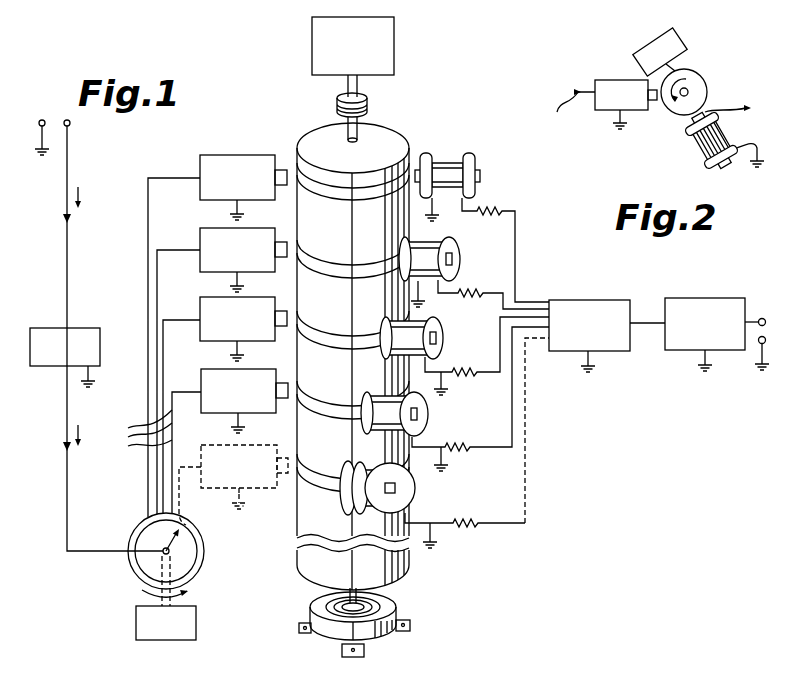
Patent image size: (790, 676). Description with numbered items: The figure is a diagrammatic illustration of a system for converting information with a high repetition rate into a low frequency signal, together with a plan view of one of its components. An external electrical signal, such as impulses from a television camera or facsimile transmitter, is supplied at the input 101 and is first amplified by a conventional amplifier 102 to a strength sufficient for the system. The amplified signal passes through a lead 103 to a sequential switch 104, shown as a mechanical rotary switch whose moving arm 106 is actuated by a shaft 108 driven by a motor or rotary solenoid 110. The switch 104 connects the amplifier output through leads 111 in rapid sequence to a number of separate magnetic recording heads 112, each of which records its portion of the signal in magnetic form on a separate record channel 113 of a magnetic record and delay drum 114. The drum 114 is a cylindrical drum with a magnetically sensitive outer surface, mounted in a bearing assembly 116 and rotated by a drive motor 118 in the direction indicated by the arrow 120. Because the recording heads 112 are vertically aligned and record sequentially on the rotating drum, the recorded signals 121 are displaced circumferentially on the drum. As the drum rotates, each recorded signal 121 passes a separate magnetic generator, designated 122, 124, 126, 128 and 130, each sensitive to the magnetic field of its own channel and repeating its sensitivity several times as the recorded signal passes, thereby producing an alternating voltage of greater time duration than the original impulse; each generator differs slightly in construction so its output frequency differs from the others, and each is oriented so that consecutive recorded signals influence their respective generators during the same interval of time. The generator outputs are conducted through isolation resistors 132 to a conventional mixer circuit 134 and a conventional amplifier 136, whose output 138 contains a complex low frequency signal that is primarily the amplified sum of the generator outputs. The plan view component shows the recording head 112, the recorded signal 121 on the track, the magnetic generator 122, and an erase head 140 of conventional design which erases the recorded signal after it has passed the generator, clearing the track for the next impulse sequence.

In FIG. 1, the input 101 is at (43, 119).
In FIG. 1, the amplifier 102 is at (46, 328).
In FIG. 1, the lead 103 is at (67, 489).
In FIG. 1, the sequential switch 104 is at (139, 527).
In FIG. 1, the moving arm 106 is at (175, 538).
In FIG. 1, the shaft 108 is at (198, 572).
In FIG. 1, the motor or rotary solenoid 110 is at (136, 631).
In FIG. 1, the leads 111 is at (153, 347).
In FIG. 1, the magnetic recording heads 112 is at (200, 158).
In FIG. 2, the magnetic recording heads 112 is at (612, 80).
In FIG. 1, the record channels 113 is at (322, 198).
In FIG. 1, the magnetic record and delay drum 114 is at (298, 142).
In FIG. 2, the magnetic record and delay drum 114 is at (707, 81).
In FIG. 1, the bearing assembly 116 is at (396, 614).
In FIG. 1, the drive motor 118 is at (394, 46).
In FIG. 1, the arrow 120 is at (368, 120).
In FIG. 1, the recorded signals 121 is at (396, 165).
In FIG. 2, the recorded signals 121 is at (574, 109).
In FIG. 2, the magnetic generator 122 is at (694, 159).
In FIG. 1, the magnetic generator 124 is at (480, 155).
In FIG. 1, the magnetic generator 126 is at (444, 338).
In FIG. 1, the magnetic generator 128 is at (428, 415).
In FIG. 1, the magnetic generator 130 is at (415, 491).
In FIG. 1, the isolation resistors 132 is at (505, 208).
In FIG. 1, the mixer circuit 134 is at (585, 300).
In FIG. 1, the amplifier 136 is at (700, 298).
In FIG. 1, the output 138 is at (766, 320).
In FIG. 2, the erase head 140 is at (687, 45).